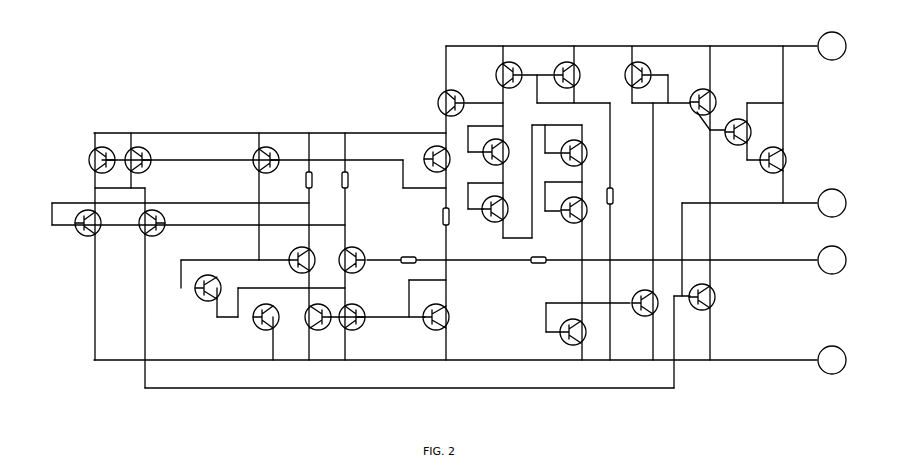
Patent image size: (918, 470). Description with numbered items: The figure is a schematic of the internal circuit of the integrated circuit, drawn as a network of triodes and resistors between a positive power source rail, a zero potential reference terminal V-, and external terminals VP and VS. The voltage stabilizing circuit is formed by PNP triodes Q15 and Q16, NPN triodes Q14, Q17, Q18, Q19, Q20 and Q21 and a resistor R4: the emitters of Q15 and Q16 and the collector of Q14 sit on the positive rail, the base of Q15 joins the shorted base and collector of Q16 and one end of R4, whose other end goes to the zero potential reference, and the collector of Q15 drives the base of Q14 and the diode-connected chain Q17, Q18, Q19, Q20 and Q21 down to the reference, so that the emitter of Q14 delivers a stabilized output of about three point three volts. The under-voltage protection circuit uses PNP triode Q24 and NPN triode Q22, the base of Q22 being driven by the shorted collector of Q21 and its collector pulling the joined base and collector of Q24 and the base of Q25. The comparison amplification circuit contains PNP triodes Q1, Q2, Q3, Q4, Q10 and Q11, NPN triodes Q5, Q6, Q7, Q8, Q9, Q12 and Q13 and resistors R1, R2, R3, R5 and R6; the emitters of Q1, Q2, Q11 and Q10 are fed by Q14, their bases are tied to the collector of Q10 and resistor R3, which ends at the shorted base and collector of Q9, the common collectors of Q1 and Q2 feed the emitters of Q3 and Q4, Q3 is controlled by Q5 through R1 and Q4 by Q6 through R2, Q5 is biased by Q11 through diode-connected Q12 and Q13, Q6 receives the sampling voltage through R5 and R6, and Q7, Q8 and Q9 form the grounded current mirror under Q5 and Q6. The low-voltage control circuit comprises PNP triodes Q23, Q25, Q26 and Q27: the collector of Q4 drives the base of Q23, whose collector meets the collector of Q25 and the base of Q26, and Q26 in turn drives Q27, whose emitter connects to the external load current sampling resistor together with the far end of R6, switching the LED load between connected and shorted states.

The PNP triode Q1 is at (104, 153).
The PNP triode Q2 is at (144, 153).
The PNP triode Q3 is at (97, 219).
The PNP triode Q4 is at (160, 219).
The NPN triode Q5 is at (311, 256).
The NPN triode Q6 is at (361, 256).
The NPN triode Q7 is at (322, 310).
The NPN triode Q8 is at (354, 310).
The NPN triode Q9 is at (445, 317).
The PNP triode Q10 is at (429, 156).
The PNP triode Q11 is at (274, 153).
The NPN triode Q12 is at (221, 285).
The NPN triode Q13 is at (274, 310).
The NPN triode Q14 is at (437, 103).
The PNP triode Q15 is at (522, 70).
The PNP triode Q16 is at (579, 70).
The NPN triode Q17 is at (508, 149).
The NPN triode Q18 is at (508, 205).
The NPN triode Q19 is at (586, 146).
The NPN triode Q20 is at (586, 218).
The NPN triode Q21 is at (585, 328).
The NPN triode Q22 is at (642, 292).
The PNP triode Q23 is at (715, 295).
The PNP triode Q24 is at (651, 68).
The PNP triode Q25 is at (715, 96).
The PNP triode Q26 is at (751, 124).
The PNP triode Q27 is at (789, 156).
The resistor R1 is at (317, 180).
The resistor R2 is at (353, 180).
The resistor R3 is at (437, 216).
The resistor R4 is at (621, 196).
The resistor R5 is at (408, 253).
The resistor R6 is at (538, 253).
The VP terminal VP is at (832, 203).
The VS terminal VS is at (832, 260).
The negative supply terminal V- is at (832, 360).